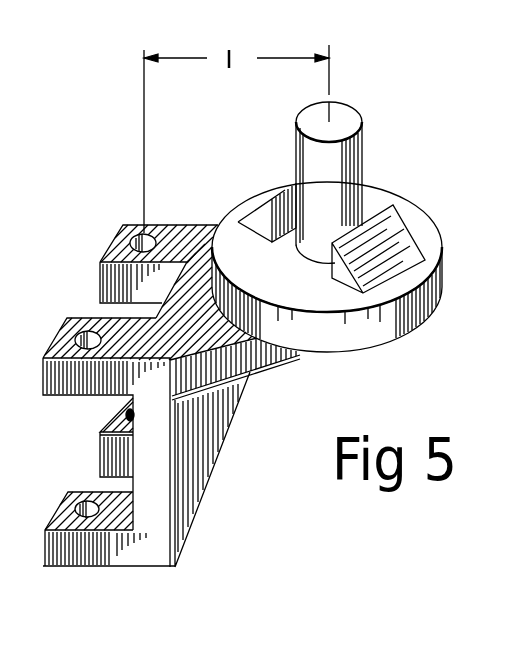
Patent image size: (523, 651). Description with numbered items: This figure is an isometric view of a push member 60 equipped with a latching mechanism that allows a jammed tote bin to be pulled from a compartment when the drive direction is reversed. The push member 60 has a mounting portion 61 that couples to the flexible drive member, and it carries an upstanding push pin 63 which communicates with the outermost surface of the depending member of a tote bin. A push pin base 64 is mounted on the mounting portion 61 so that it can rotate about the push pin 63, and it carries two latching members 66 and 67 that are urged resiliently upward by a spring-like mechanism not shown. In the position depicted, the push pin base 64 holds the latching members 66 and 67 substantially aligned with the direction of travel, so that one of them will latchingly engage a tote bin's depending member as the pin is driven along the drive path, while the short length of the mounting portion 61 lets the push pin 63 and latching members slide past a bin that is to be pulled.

The push member 60 is at (241, 447).
The mounting portion 61 is at (82, 558).
The push pin 63 is at (361, 145).
The push pin base 64 is at (390, 194).
The latching member 66 is at (278, 207).
The latching member 67 is at (402, 247).